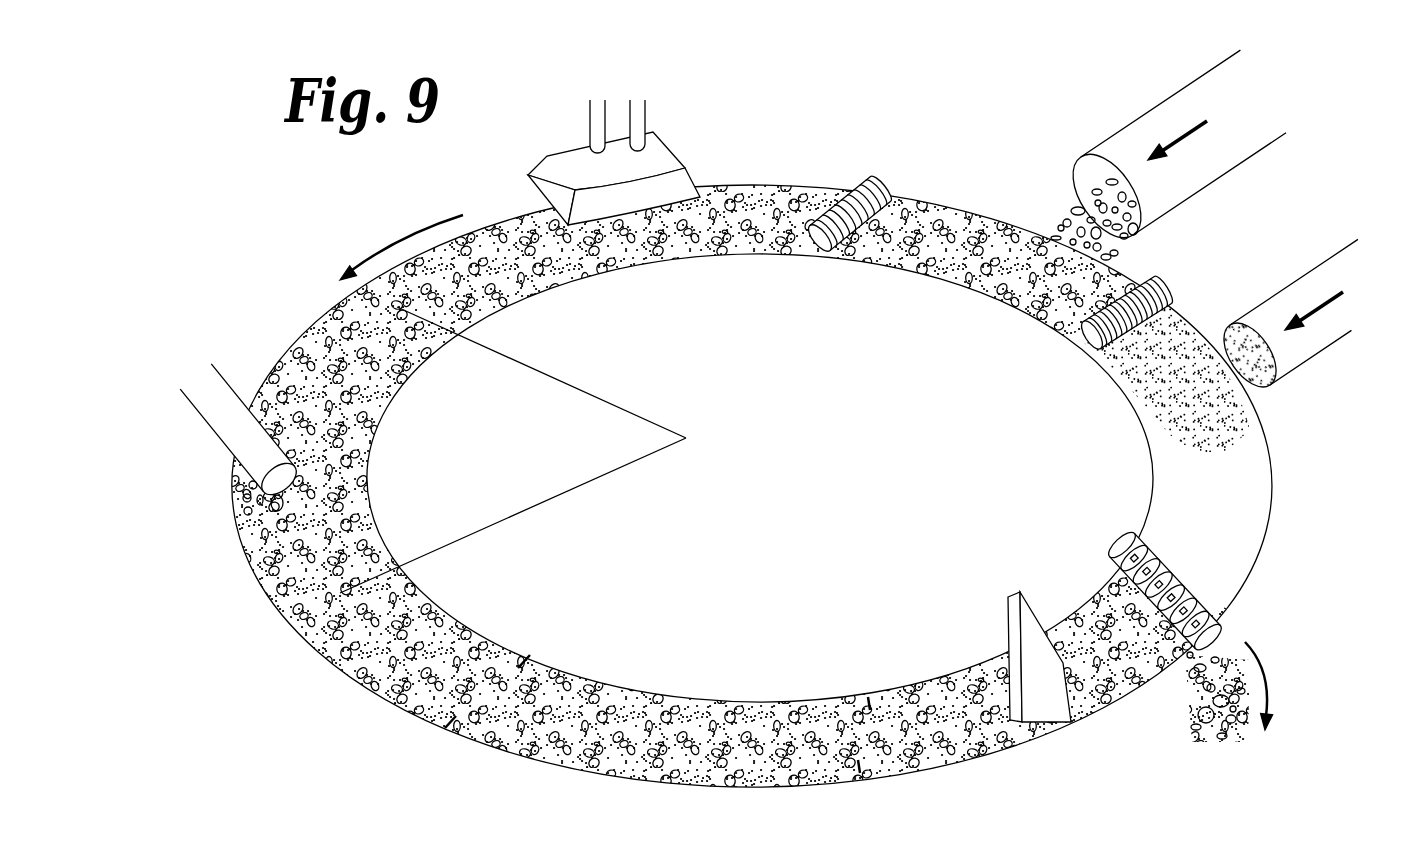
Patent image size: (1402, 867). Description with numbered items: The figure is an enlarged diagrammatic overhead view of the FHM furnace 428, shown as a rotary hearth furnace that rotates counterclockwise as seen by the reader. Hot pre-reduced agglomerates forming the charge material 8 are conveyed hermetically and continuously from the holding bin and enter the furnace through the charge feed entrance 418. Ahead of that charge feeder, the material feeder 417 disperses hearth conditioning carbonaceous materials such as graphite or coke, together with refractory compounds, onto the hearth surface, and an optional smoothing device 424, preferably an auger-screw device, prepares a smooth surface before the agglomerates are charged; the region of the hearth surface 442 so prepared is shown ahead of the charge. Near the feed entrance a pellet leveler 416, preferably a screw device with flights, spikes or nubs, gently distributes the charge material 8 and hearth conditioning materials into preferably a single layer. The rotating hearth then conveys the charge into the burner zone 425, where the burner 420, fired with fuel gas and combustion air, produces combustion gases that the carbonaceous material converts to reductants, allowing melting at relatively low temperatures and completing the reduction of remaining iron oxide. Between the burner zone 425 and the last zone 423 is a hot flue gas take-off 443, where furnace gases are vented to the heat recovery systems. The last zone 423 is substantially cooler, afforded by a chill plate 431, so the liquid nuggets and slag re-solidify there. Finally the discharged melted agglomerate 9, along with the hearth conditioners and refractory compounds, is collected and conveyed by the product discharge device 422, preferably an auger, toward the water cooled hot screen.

The charge material 8 is at (1067, 222).
The discharged melted agglomerate 9 is at (1240, 735).
The pellet leveler 416 is at (873, 177).
The material feeder 417 is at (1303, 290).
The charge feed entrance 418 is at (1149, 155).
The burner 420 is at (575, 155).
The product discharge device 422 is at (1168, 563).
The last zone 423 is at (918, 723).
The smoothing device 424 is at (1093, 338).
The burner zone 425 is at (539, 450).
The FHM furnace 428 is at (282, 650).
The chill plate 431 is at (1050, 693).
The trough surface 442 is at (1238, 473).
The hot flue gas take-off 443 is at (218, 392).